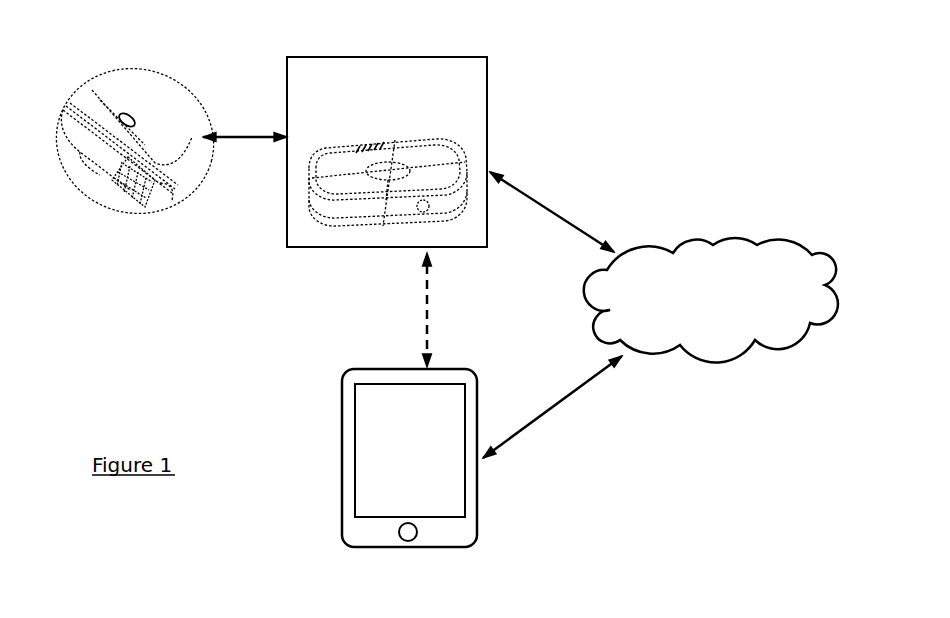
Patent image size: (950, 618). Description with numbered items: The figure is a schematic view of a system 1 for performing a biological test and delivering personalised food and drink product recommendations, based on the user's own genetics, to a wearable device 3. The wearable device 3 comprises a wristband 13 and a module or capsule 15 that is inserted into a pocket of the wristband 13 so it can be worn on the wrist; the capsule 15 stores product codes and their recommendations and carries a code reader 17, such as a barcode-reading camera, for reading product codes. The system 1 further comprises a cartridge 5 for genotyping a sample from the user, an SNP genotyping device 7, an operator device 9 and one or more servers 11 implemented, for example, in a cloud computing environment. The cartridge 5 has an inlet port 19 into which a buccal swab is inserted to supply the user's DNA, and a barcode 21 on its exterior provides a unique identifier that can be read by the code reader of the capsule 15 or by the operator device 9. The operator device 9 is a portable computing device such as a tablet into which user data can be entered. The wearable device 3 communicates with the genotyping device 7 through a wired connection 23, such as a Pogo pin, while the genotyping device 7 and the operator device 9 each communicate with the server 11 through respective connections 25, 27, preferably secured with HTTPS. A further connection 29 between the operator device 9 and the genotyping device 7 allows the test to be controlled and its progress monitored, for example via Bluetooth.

The system 1 is at (645, 119).
The wearable device 3 is at (123, 152).
The cartridge 5 is at (343, 222).
The SNP genotyping device 7 is at (488, 102).
The operator device 9 is at (342, 412).
The server 11 is at (702, 245).
The wristband 13 is at (97, 148).
The capsule 15 is at (107, 82).
The code reader 17 is at (130, 115).
The inlet port 19 is at (420, 213).
The barcode 21 is at (365, 152).
The wired connection 23 is at (249, 133).
The connection 25 is at (557, 213).
The connection 27 is at (575, 398).
The connection 29 is at (431, 301).